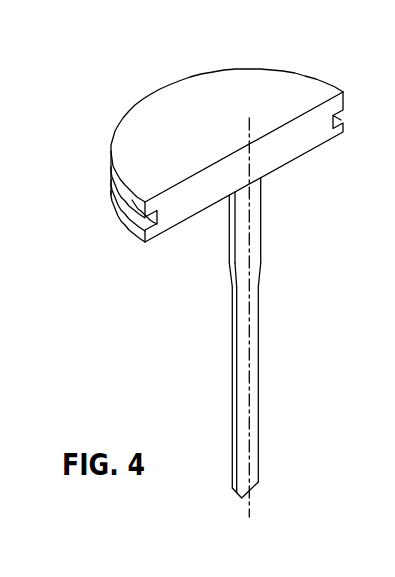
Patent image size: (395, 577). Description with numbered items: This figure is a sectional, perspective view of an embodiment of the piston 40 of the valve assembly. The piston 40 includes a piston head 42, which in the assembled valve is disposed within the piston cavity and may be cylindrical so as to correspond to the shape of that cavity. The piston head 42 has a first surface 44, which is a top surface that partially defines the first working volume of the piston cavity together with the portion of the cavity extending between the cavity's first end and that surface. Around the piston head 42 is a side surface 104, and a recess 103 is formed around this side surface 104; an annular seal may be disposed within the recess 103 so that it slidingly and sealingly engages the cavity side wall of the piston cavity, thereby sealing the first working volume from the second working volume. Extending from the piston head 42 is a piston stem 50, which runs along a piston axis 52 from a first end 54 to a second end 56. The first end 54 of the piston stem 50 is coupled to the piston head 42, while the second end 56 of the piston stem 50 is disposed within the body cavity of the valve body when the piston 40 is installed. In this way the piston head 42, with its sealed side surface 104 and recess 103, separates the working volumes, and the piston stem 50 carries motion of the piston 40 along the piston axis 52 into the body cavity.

The piston 40 is at (196, 272).
The piston head 42 is at (191, 130).
The first surface 44 is at (277, 87).
The piston stem 50 is at (290, 321).
The piston axis 52 is at (249, 505).
The first end 54 is at (278, 216).
The second end 56 is at (280, 478).
The recess 103 is at (130, 207).
The side surface 104 is at (113, 178).